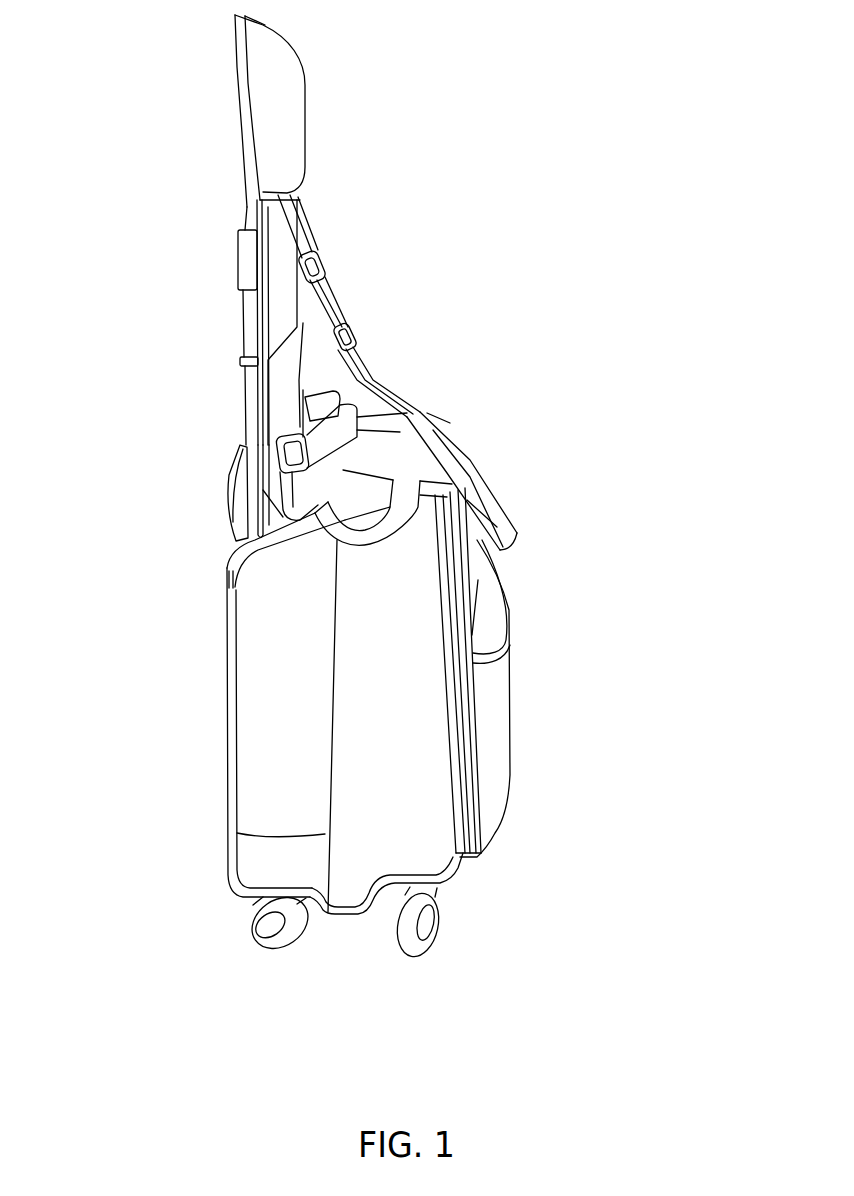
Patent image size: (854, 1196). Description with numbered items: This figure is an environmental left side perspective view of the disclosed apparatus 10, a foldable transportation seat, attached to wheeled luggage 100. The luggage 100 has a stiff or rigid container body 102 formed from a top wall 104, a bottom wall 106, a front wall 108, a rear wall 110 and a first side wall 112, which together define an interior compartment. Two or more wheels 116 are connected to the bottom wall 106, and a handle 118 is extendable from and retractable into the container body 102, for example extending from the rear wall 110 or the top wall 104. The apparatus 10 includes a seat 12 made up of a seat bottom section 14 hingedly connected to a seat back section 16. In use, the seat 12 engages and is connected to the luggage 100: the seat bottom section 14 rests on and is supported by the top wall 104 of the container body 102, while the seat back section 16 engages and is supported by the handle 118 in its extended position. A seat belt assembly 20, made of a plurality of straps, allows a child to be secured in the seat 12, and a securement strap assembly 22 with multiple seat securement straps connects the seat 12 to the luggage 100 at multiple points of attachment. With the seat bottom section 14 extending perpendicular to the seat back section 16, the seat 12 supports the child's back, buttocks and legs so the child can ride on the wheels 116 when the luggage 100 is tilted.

The apparatus 10 is at (427, 237).
The seat 12 is at (417, 410).
The seat bottom section 14 is at (417, 472).
The seat back section 16 is at (305, 130).
The seat belt assembly 20 is at (387, 328).
The securement strap assembly 22 is at (200, 397).
The luggage 100 is at (593, 613).
The container body 102 is at (500, 820).
The top wall 104 is at (255, 552).
The bottom wall 106 is at (338, 912).
The front wall 108 is at (508, 688).
The rear wall 110 is at (235, 700).
The first side wall 112 is at (387, 752).
The wheels 116 is at (253, 928).
The handle 118 is at (248, 315).